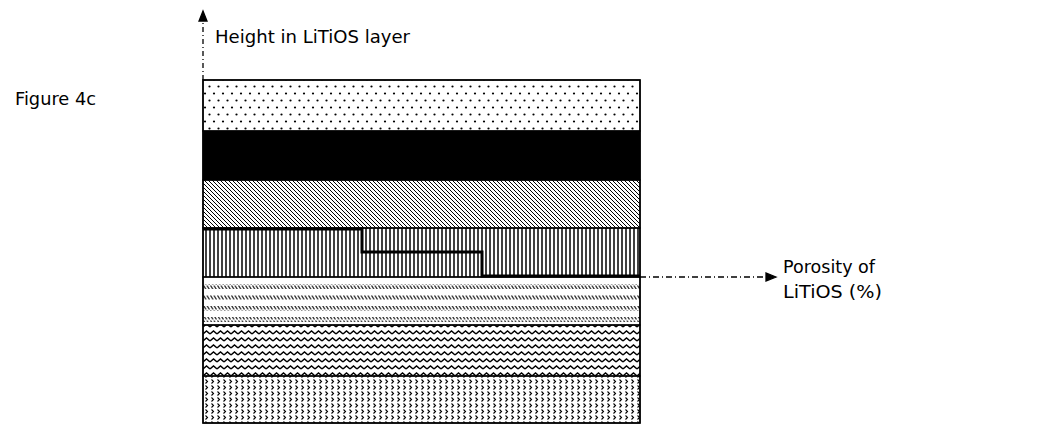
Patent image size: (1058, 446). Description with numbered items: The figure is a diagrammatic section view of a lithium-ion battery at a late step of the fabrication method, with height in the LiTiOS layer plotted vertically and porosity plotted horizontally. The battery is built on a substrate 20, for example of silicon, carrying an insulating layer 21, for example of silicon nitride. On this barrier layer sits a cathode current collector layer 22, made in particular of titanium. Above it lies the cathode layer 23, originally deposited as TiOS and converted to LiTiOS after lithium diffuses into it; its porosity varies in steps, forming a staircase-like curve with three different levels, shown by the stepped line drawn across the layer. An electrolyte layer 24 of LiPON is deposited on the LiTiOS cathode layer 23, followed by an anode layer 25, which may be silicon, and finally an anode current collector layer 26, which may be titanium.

The substrate 20 is at (608, 410).
The insulating layer 21 is at (610, 346).
The cathode current collector layer 22 is at (606, 303).
The cathode layer 23 is at (610, 262).
The electrolyte layer 24 is at (612, 215).
The anode layer 25 is at (640, 151).
The anode current collector layer 26 is at (613, 109).